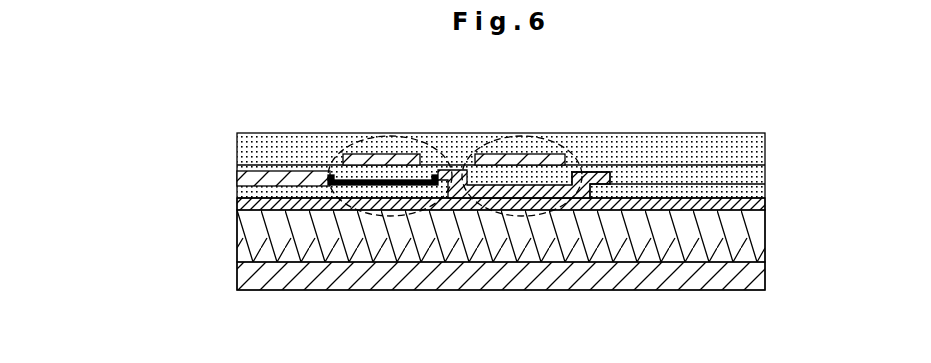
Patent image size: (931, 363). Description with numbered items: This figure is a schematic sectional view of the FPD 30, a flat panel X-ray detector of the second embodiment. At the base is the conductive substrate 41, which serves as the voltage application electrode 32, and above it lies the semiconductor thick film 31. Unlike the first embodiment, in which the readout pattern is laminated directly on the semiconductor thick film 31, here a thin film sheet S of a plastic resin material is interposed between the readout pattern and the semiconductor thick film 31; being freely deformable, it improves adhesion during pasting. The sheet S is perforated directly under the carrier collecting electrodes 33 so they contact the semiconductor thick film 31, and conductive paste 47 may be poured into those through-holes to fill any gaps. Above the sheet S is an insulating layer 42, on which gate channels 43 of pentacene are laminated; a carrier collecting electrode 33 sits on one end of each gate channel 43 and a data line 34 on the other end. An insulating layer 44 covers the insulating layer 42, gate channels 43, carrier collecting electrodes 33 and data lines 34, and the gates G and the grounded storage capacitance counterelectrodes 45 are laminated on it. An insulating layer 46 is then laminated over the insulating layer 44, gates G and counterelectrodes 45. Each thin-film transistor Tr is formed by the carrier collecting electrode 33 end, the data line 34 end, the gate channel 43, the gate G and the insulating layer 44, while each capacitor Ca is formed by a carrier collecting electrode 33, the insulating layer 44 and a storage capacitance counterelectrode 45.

The FPD 30 is at (186, 223).
The insulating layer 46 is at (248, 151).
The insulating layer 44 is at (750, 176).
The insulating layer 42 is at (248, 192).
The data line 34 is at (248, 178).
The gate channel 43 is at (431, 176).
The conductive paste 47 is at (464, 200).
The carrier collecting electrode 33 is at (636, 173).
The gate G is at (381, 154).
The storage capacitance counterelectrode 45 is at (498, 154).
The thin film sheet S is at (762, 203).
The semiconductor thick film 31 is at (248, 246).
The conductive substrate 41 is at (415, 276).
The voltage application electrode 32 is at (248, 274).
The thin-film transistor Tr is at (348, 138).
The capacitor Ca is at (518, 136).